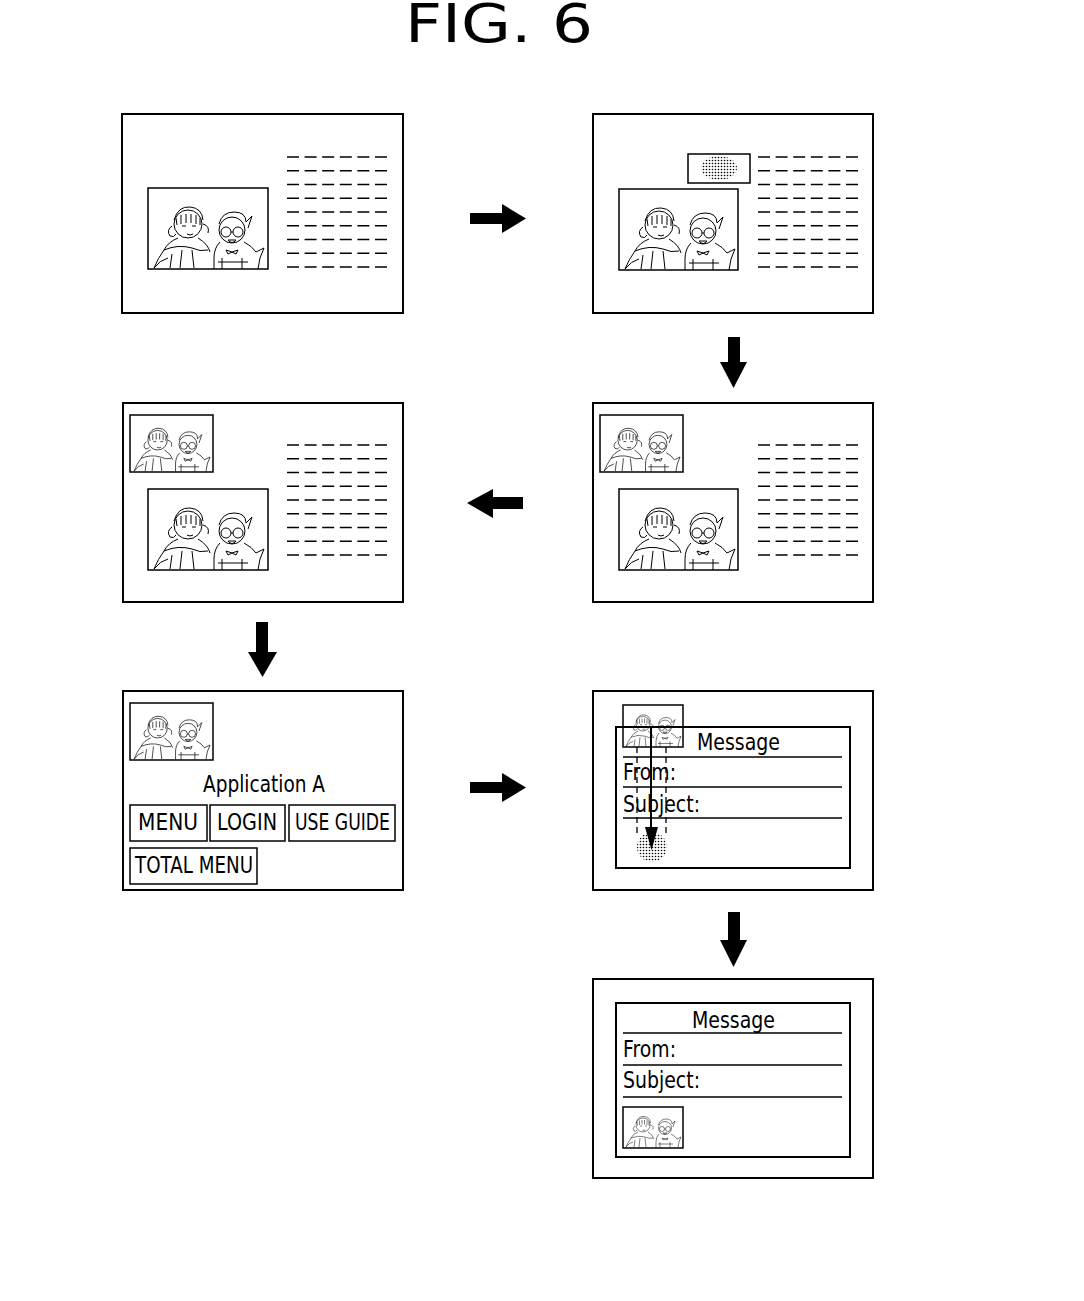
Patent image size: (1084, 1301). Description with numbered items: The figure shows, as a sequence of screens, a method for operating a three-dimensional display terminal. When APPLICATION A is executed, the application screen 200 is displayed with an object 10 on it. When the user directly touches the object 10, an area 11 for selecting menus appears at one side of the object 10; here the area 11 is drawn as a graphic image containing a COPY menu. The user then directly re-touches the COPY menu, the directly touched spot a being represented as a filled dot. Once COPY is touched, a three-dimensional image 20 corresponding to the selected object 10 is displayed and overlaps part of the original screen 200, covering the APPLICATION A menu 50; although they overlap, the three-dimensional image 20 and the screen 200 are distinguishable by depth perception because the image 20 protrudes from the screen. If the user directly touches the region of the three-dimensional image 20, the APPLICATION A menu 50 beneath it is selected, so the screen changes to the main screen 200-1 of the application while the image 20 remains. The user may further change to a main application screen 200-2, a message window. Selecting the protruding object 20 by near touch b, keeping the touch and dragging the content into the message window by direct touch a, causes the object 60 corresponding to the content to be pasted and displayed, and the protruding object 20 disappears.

The application screen 200 is at (348, 113).
The APPLICATION A menu 50 is at (142, 141).
The object 10 is at (148, 228).
The area to select menus 11 is at (740, 153).
The direct touch spot a is at (688, 158).
The 3D image 20 is at (130, 453).
The main screen of the application 200-1 is at (348, 690).
The main application screen 200-2 is at (819, 690).
The near touch b is at (652, 705).
The pasted object 60 is at (623, 1123).